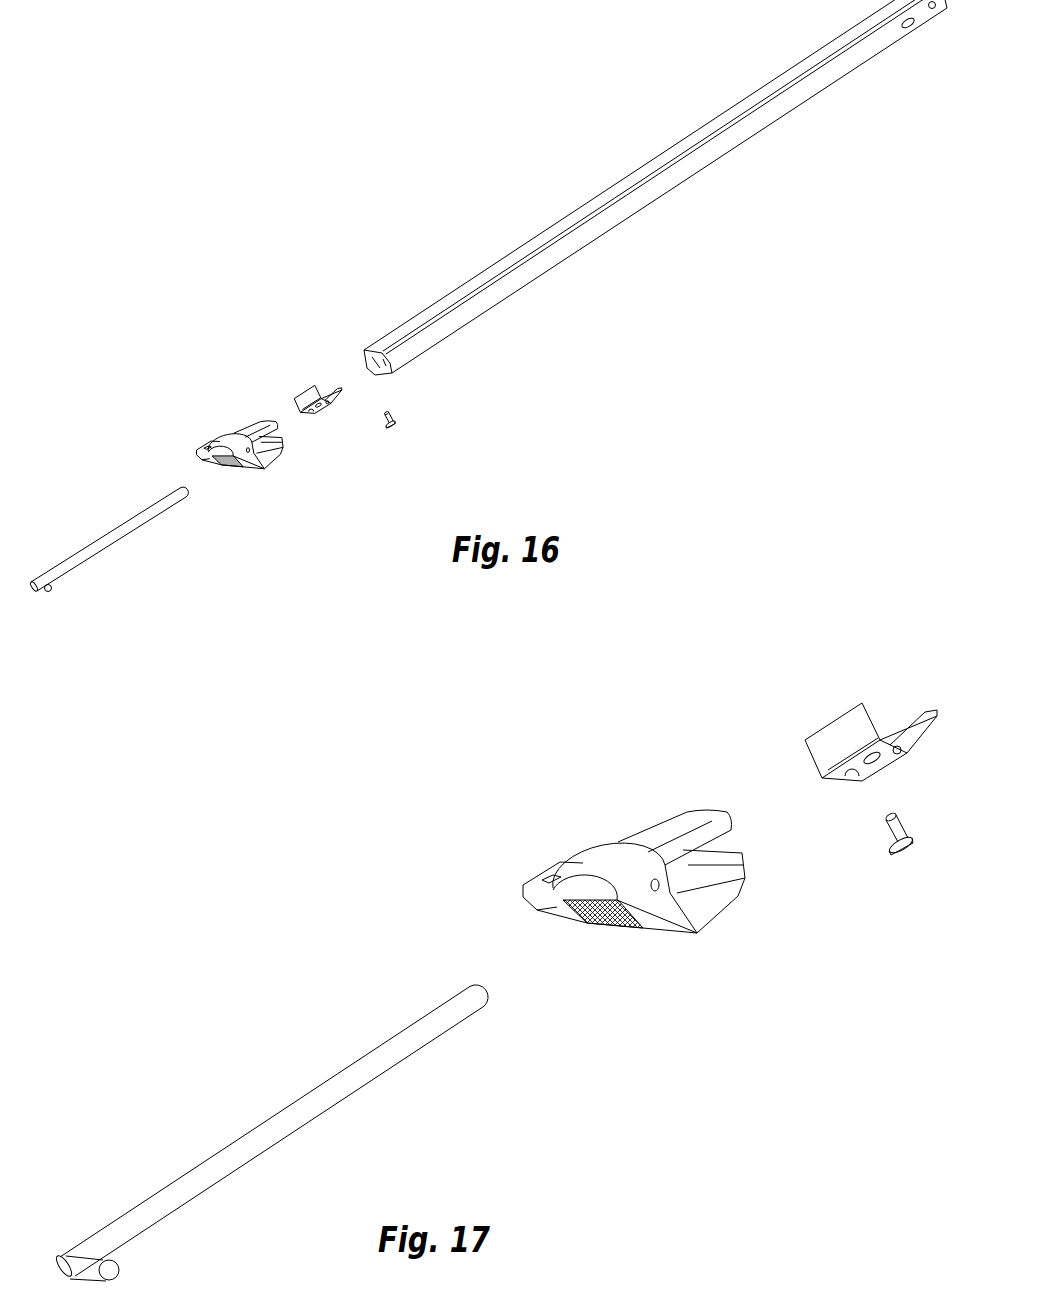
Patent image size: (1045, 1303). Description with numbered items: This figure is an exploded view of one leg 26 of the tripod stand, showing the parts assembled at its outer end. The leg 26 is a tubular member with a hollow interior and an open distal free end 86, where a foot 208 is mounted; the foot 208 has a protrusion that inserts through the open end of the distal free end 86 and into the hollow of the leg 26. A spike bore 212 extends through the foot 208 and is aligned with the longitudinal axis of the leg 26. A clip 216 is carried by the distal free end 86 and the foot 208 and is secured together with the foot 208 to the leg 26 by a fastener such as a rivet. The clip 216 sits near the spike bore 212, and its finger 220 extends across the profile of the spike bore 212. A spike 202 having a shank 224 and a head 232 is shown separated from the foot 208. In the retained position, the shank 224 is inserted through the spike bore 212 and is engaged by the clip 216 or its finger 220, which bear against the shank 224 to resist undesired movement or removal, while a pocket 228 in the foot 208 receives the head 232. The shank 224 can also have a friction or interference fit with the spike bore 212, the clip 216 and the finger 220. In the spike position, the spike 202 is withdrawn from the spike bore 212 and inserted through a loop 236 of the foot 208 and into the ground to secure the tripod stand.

In FIG. 16, the leg 26 is at (656, 197).
In FIG. 16, the distal free end 86 is at (437, 335).
In FIG. 16, the spike 202 is at (109, 568).
In FIG. 17, the spike 202 is at (271, 1133).
In FIG. 16, the foot 208 is at (218, 486).
In FIG. 17, the foot 208 is at (601, 912).
In FIG. 16, the spike bore 212 is at (257, 455).
In FIG. 17, the spike bore 212 is at (693, 900).
In FIG. 16, the clip 216 is at (281, 348).
In FIG. 17, the clip 216 is at (835, 691).
In FIG. 16, the finger 220 is at (340, 388).
In FIG. 17, the finger 220 is at (928, 705).
In FIG. 16, the shank 224 is at (133, 522).
In FIG. 17, the shank 224 is at (263, 1135).
In FIG. 16, the pocket 228 is at (233, 455).
In FIG. 17, the pocket 228 is at (636, 900).
In FIG. 16, the head 232 is at (38, 595).
In FIG. 17, the head 232 is at (118, 1276).
In FIG. 16, the loop 236 is at (202, 442).
In FIG. 17, the loop 236 is at (543, 875).